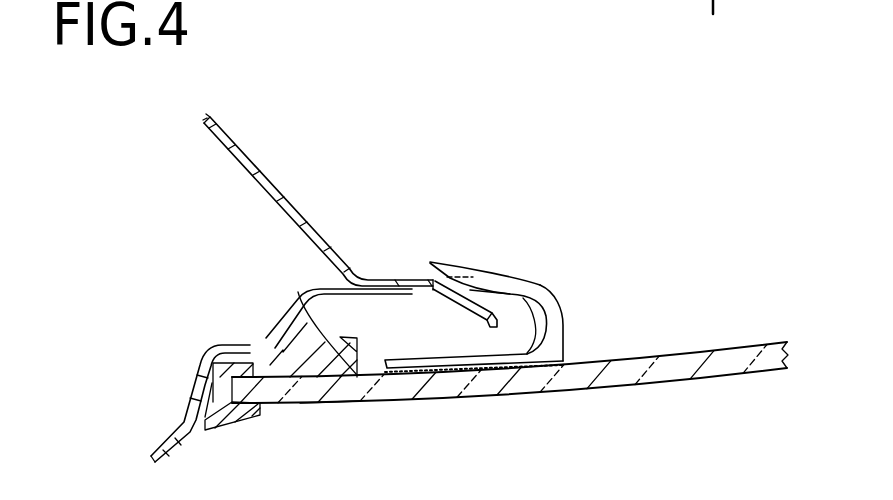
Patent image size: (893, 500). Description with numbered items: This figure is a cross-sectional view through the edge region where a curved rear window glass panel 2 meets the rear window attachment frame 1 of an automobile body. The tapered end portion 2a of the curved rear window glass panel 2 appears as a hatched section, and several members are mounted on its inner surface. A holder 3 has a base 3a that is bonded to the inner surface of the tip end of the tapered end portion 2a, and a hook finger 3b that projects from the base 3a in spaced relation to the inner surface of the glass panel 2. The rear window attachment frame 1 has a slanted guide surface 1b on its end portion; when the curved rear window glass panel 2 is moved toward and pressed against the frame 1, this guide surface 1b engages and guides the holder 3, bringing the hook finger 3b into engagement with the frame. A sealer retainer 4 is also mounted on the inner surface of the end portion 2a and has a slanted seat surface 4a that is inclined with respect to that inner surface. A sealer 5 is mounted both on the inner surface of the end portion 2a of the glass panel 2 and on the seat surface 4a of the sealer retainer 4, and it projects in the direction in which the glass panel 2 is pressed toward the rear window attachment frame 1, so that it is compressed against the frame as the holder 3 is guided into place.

The rear window attachment frame 1 is at (380, 220).
The slanted guide surface 1b is at (483, 294).
The curved rear window glass panel 2 is at (750, 343).
The tapered end portion 2a is at (337, 403).
The holder 3 is at (508, 268).
The base 3a is at (502, 368).
The hook finger 3b is at (457, 268).
The sealer retainer 4 is at (360, 358).
The slanted seat surface 4a is at (298, 292).
The sealer 5 is at (265, 347).